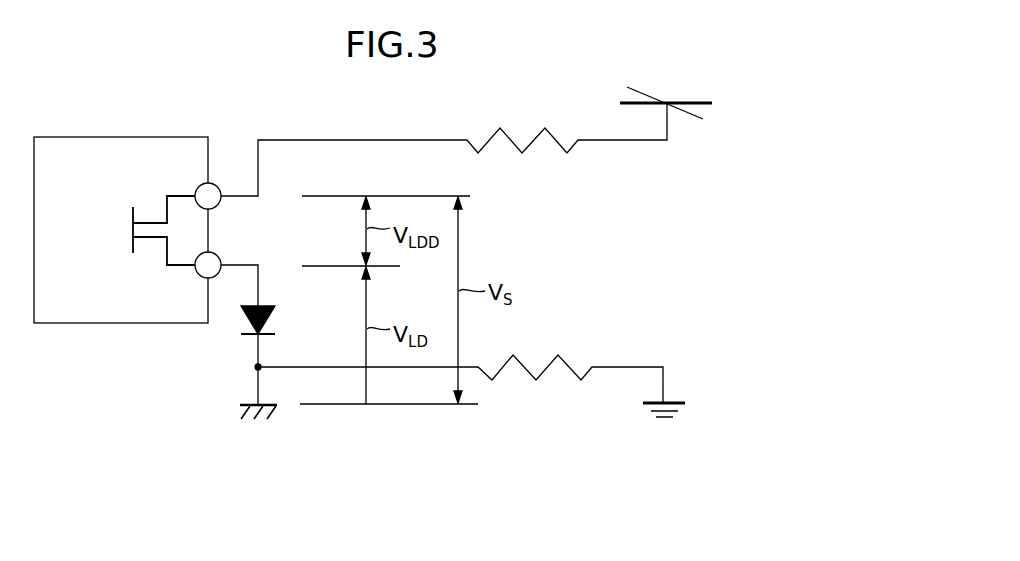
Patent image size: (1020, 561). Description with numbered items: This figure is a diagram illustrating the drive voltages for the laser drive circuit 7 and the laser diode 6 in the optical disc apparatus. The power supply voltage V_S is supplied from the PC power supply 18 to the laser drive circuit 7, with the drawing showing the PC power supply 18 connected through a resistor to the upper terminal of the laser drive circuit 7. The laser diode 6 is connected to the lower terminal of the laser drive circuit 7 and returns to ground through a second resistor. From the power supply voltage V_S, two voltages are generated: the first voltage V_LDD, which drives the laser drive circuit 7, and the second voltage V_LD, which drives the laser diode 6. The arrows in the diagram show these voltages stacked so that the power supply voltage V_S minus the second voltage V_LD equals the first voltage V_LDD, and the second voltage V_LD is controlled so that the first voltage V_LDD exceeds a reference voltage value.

The laser drive circuit 7 is at (140, 137).
The laser diode 6 is at (276, 319).
The PC power supply 18 is at (672, 85).